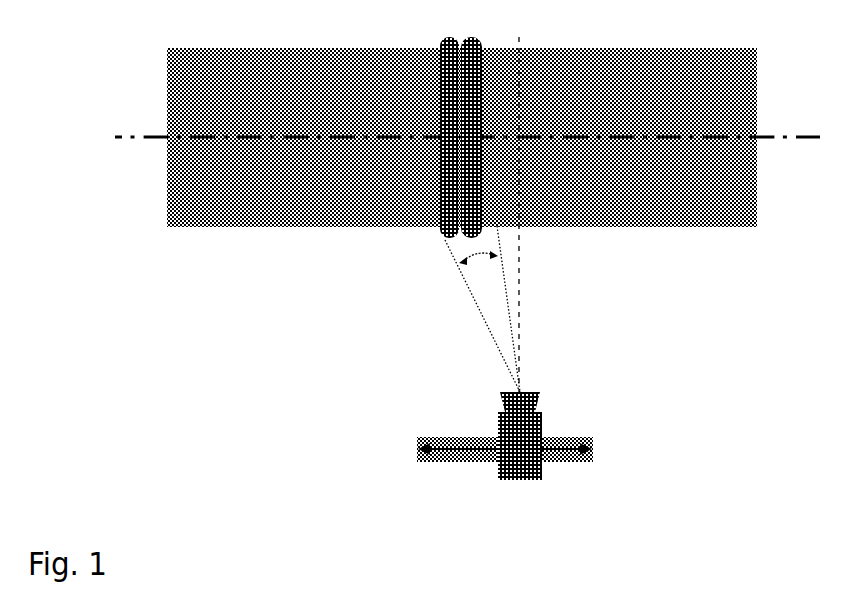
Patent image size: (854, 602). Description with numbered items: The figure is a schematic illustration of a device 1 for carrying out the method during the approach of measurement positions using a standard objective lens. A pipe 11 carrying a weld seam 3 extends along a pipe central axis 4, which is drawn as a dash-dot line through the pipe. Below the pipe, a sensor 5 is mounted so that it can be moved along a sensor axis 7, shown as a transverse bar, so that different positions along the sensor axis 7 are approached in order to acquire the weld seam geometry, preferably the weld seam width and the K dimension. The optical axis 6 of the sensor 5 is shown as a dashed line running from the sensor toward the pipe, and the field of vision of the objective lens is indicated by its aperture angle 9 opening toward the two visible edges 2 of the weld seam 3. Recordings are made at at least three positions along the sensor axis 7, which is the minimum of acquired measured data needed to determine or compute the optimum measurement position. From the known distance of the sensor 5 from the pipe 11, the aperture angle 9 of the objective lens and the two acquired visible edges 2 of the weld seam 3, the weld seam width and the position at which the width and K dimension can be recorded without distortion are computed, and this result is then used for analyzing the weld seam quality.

The device 1 is at (350, 465).
The visible edges 2 is at (440, 228).
The weld seam 3 is at (442, 77).
The pipe central axis 4 is at (255, 136).
The sensor 5 is at (498, 470).
The optical axis 6 is at (520, 310).
The sensor axis 7 is at (572, 437).
The aperture angle 9 is at (460, 261).
The pipe 11 is at (283, 215).